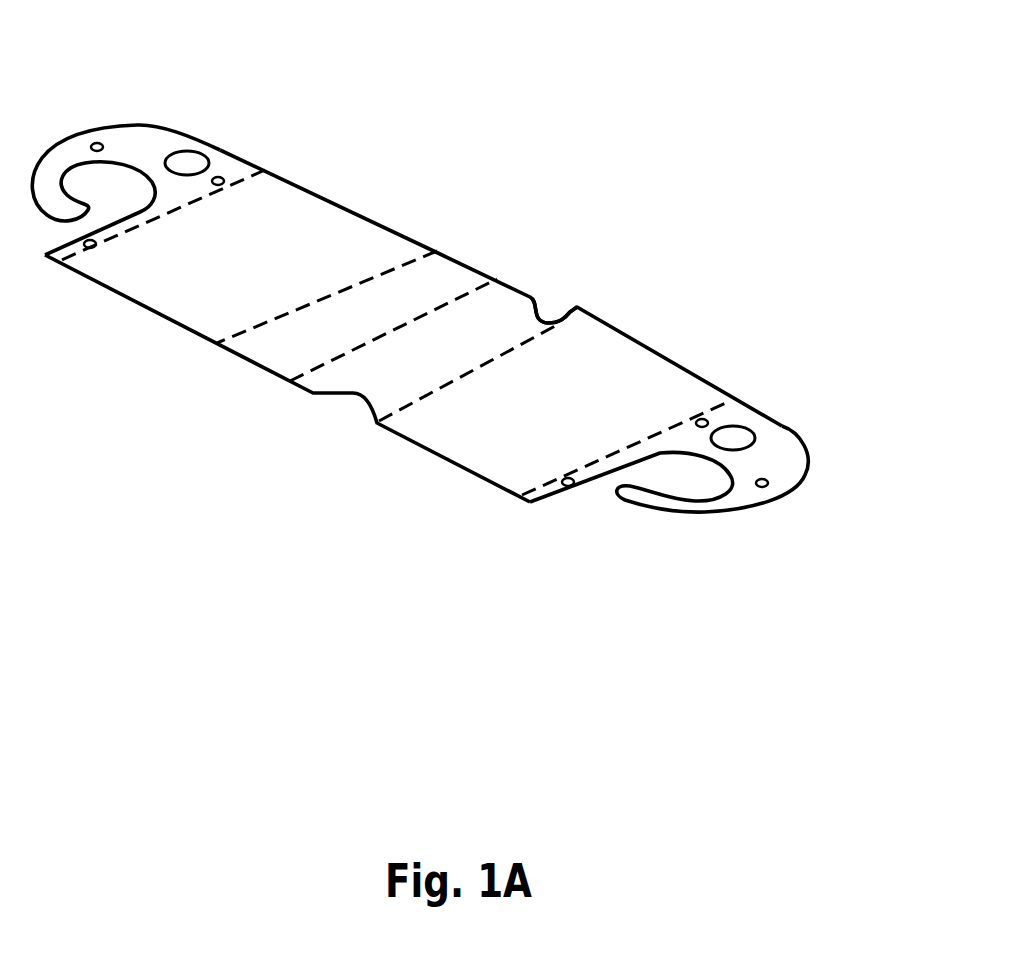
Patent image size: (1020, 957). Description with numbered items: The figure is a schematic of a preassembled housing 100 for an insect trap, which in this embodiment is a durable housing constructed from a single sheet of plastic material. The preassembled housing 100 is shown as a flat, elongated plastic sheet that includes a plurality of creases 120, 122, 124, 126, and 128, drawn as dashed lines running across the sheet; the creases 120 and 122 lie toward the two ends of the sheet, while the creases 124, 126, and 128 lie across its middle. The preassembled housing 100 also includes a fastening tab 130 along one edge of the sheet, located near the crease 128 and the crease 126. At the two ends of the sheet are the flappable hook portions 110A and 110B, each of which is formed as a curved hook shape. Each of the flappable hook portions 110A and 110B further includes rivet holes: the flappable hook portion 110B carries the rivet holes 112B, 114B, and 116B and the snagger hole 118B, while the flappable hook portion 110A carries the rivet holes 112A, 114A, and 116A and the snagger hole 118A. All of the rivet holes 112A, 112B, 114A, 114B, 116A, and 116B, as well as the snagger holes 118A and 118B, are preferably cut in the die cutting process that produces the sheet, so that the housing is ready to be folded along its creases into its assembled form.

The preassembled housing 100 is at (420, 313).
The flappable hook portion 110A is at (669, 497).
The flappable hook portion 110B is at (347, 62).
The rivet hole 112A is at (767, 558).
The rivet hole 112B is at (133, 79).
The rivet hole 114A is at (791, 389).
The rivet hole 114B is at (331, 127).
The rivet hole 116A is at (524, 544).
The rivet hole 116B is at (92, 316).
The snagger hole 118A is at (817, 426).
The snagger hole 118B is at (219, 98).
The crease 120 is at (242, 204).
The crease 122 is at (687, 401).
The crease 124 is at (399, 282).
The crease 126 is at (438, 414).
The crease 128 is at (474, 322).
The fastening tab 130 is at (638, 315).